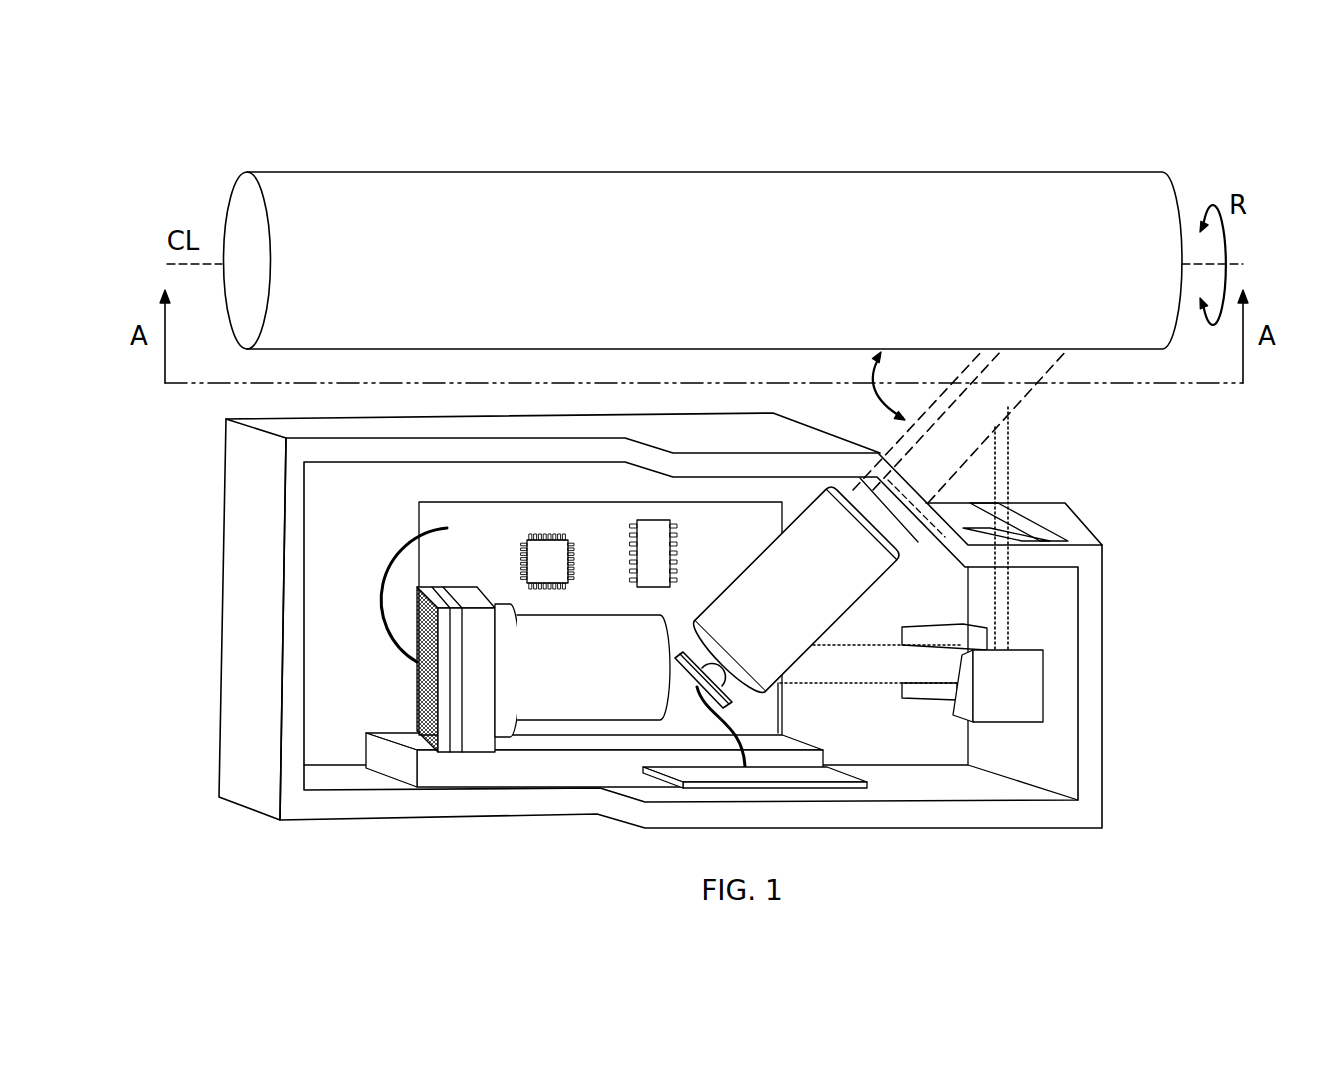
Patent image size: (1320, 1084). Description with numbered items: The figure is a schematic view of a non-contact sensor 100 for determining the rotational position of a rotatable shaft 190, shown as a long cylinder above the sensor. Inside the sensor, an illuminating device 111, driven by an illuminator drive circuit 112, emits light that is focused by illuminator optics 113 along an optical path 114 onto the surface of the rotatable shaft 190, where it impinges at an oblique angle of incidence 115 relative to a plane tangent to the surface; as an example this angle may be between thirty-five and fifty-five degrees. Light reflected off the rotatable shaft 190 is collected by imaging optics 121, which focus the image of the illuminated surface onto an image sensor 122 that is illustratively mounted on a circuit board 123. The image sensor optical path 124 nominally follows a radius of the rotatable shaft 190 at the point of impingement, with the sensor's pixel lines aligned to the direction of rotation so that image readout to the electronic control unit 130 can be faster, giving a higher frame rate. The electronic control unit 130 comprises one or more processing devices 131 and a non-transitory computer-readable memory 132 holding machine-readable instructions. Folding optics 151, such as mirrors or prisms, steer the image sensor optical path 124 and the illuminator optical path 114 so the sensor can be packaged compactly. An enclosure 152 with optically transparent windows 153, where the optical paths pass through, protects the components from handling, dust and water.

The non-contact sensor 100 is at (750, 620).
The illuminating device 111 is at (745, 700).
The illuminator drive circuit 112 is at (870, 778).
The illuminator optics 113 is at (813, 609).
The optical path 114 is at (1038, 408).
The angle of incidence 115 is at (913, 420).
The imaging optics 121 is at (612, 682).
The image sensor 122 is at (419, 670).
The circuit board 123 is at (419, 701).
The optical path 124 is at (1022, 482).
The electronic control unit 130 is at (419, 520).
The processing devices 131 is at (525, 560).
The non-transitory computer-readable memory 132 is at (678, 562).
The folding optics 151 is at (942, 700).
The enclosure 152 is at (225, 521).
The window 153 is at (1035, 533).
The rotatable shaft 190 is at (1084, 172).